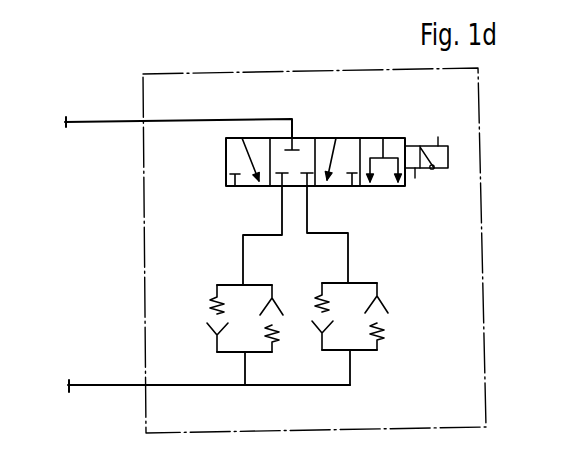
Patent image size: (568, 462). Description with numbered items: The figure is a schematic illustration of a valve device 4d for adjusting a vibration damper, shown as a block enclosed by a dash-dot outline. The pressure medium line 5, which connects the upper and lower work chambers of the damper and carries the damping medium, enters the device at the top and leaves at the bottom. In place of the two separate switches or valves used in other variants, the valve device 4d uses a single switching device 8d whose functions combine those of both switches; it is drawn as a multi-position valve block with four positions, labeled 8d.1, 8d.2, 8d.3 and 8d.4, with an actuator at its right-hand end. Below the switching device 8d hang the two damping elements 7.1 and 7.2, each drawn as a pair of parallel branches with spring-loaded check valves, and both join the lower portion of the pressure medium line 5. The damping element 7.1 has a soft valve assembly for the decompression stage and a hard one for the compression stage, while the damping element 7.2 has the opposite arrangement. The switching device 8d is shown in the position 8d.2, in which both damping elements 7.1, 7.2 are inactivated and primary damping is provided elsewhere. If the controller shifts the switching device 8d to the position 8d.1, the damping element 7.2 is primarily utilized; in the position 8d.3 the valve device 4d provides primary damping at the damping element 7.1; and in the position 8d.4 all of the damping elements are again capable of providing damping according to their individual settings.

The valve device 4d is at (143, 252).
The pressure medium line 5 is at (98, 122).
The switching device 8d is at (327, 138).
The switching device position 8d.1 is at (242, 138).
The switching device position 8d.2 is at (275, 138).
The switching device position 8d.3 is at (346, 140).
The switching device position 8d.4 is at (401, 138).
The damping element 7.1 is at (240, 302).
The damping element 7.2 is at (353, 298).